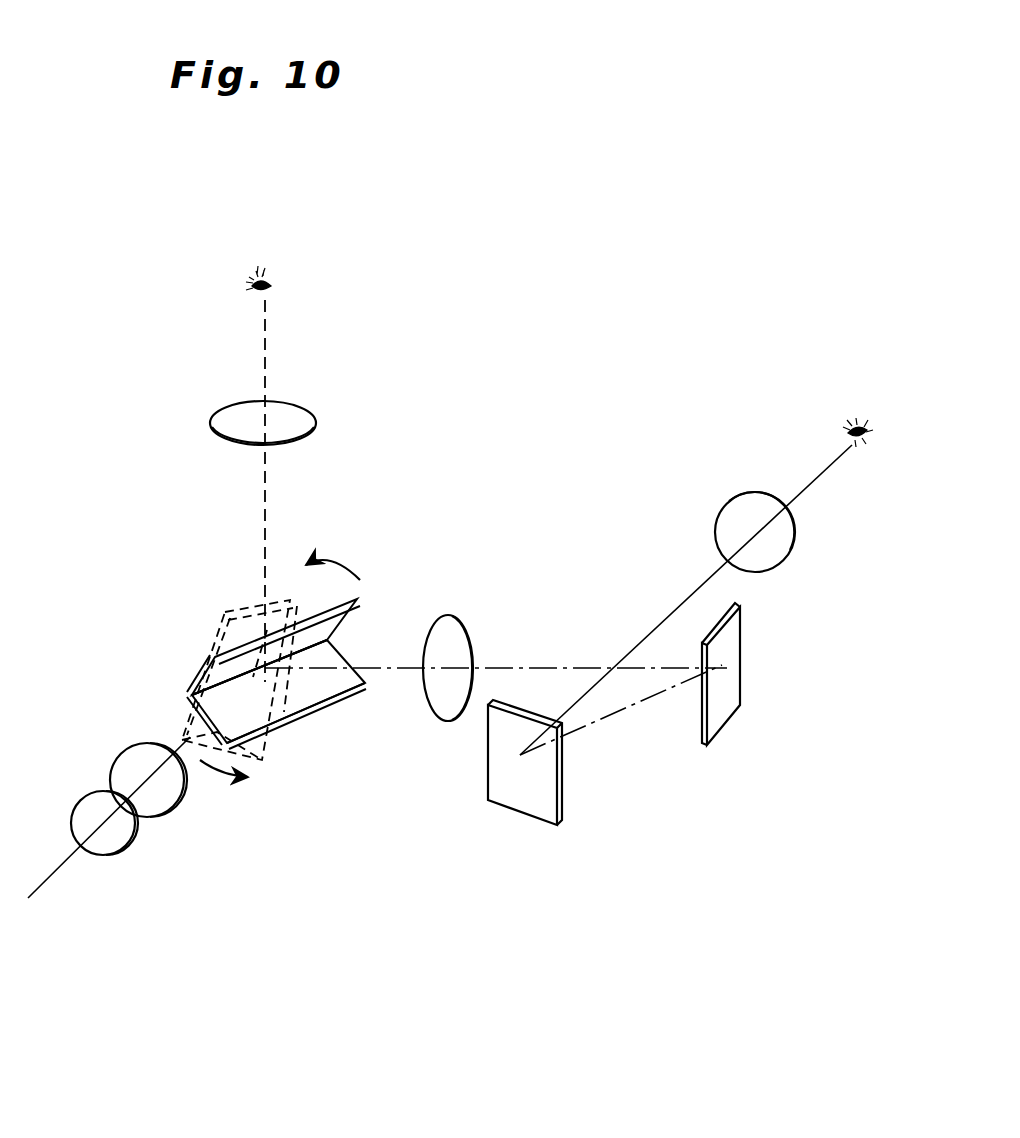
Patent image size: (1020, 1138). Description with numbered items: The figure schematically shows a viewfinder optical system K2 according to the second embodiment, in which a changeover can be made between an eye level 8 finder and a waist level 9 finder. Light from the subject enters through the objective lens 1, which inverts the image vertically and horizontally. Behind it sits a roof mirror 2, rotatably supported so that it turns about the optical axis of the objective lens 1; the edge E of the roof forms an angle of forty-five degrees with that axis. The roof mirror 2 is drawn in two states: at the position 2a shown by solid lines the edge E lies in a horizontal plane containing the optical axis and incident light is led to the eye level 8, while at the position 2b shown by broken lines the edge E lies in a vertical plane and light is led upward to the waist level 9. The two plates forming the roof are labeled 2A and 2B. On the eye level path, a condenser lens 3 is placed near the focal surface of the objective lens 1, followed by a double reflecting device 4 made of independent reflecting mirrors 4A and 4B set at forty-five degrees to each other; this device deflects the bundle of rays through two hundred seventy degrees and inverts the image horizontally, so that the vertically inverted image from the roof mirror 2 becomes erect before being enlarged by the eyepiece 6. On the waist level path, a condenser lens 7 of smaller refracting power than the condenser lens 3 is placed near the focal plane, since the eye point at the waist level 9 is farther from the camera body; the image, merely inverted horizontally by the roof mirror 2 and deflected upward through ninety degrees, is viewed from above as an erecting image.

The objective lens 1 is at (203, 787).
The roof mirror 2 is at (279, 657).
The first mirror plate 2A is at (328, 680).
The second mirror plate 2B is at (358, 616).
The position of the roof mirror shown by solid lines 2a is at (307, 713).
The position of the roof mirror shown by broken lines 2b is at (247, 632).
The edge of the roof E is at (333, 650).
The condenser lens 3 is at (450, 630).
The double reflecting device 4 is at (640, 783).
The reflecting mirror 4A is at (720, 713).
The reflecting mirror 4B is at (522, 798).
The eyepiece 6 is at (742, 513).
The condenser lens 7 is at (293, 415).
The eye level finder 8 is at (857, 422).
The waist level finder 9 is at (273, 288).
The viewfinder optical system K2 is at (488, 430).